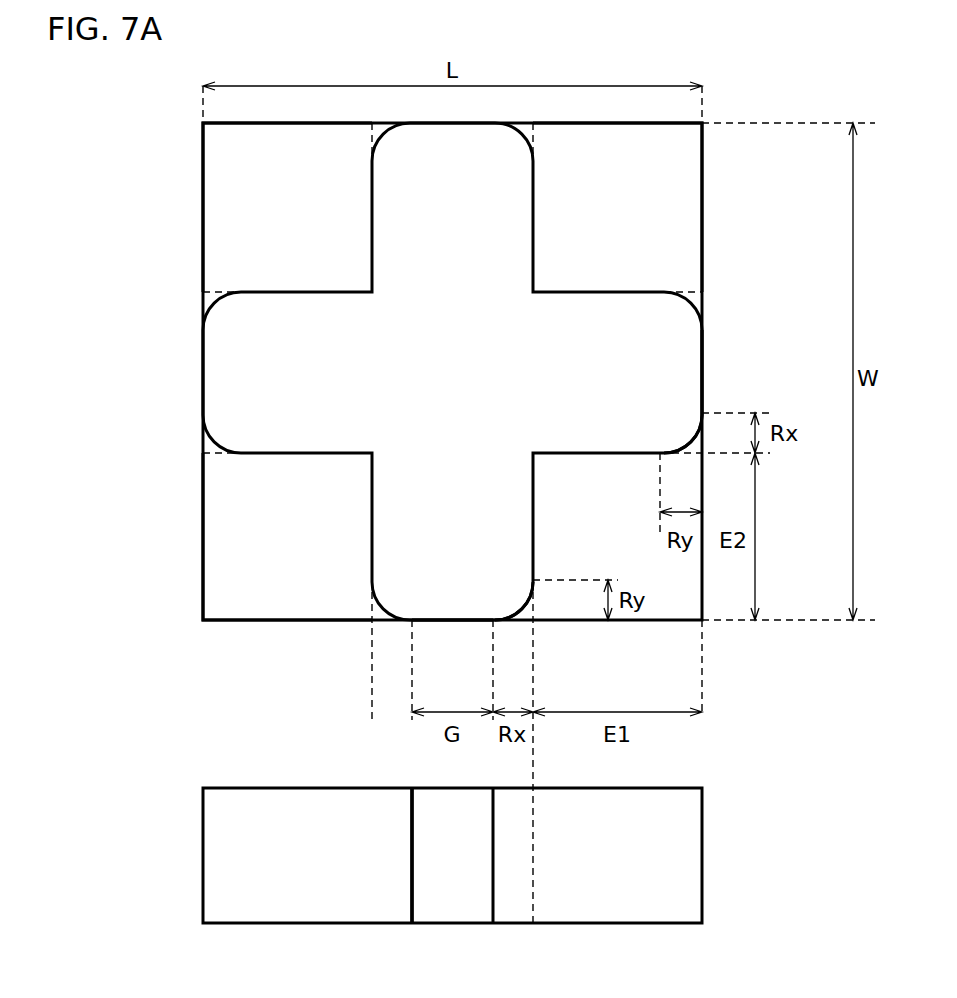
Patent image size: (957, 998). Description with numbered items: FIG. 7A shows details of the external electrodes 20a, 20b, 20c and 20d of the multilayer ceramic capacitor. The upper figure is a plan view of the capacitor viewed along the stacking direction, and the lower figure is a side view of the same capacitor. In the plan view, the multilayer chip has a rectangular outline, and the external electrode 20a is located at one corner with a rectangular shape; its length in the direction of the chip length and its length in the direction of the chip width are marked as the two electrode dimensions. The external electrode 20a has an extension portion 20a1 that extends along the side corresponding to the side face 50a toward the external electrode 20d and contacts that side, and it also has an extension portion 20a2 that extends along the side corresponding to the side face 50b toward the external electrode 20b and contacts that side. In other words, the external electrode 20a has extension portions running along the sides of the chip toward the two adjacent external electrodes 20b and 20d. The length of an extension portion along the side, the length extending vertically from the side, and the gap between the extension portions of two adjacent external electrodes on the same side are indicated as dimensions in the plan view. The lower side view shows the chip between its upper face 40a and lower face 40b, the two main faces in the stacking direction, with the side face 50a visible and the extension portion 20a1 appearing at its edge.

The external electrode 20a is at (668, 590).
The extension portion 20a1 is at (526, 612).
The extension portion 20a2 is at (691, 446).
The external electrode 20b is at (668, 198).
The external electrode 20c is at (222, 210).
The external electrode 20d is at (216, 510).
The upper face 40a is at (427, 787).
The lower face 40b is at (422, 925).
The side face 50a is at (455, 623).
The side face 50b is at (702, 365).